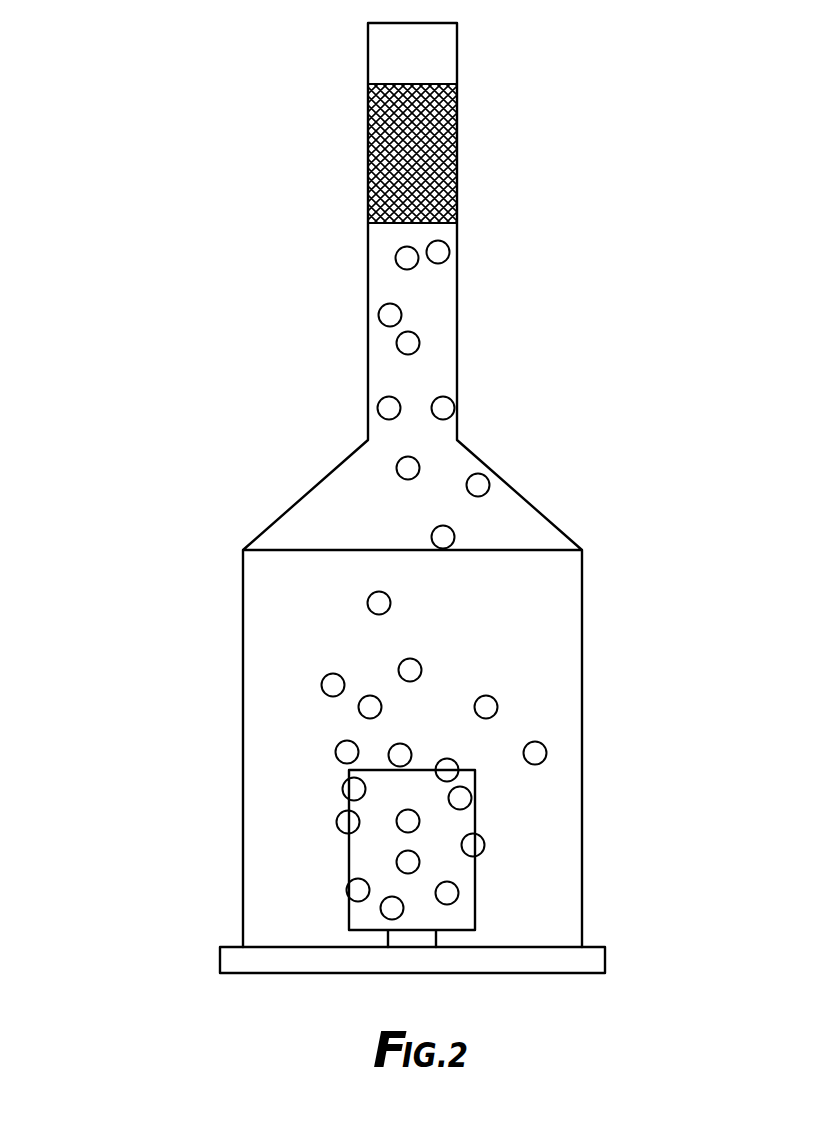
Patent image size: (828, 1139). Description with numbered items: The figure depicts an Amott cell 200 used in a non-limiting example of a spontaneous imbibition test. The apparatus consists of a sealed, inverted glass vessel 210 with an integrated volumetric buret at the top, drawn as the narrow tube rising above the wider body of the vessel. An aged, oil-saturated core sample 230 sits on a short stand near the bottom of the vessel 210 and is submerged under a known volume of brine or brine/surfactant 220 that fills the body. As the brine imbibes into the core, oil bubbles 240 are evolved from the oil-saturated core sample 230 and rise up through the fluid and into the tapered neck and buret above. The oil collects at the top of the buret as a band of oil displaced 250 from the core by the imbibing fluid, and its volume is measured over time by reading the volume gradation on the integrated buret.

The Amott cell 200 is at (372, 486).
The glass vessel 210 is at (464, 498).
The brine or brine/surfactant 220 is at (548, 782).
The core sample 230 is at (350, 862).
The oil bubbles 240 is at (480, 485).
The oil displaced 250 is at (437, 143).